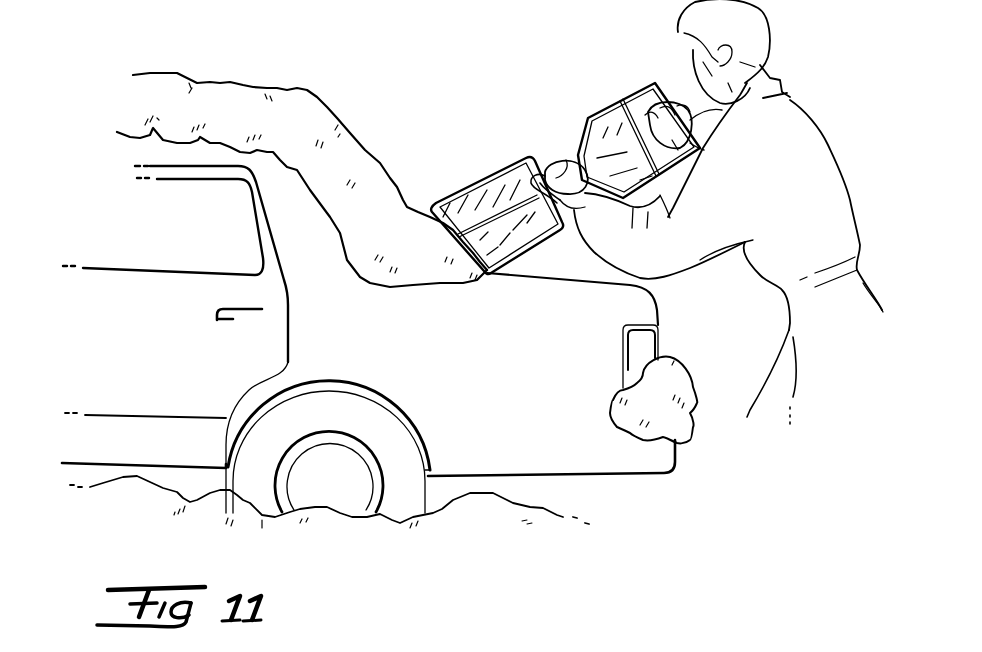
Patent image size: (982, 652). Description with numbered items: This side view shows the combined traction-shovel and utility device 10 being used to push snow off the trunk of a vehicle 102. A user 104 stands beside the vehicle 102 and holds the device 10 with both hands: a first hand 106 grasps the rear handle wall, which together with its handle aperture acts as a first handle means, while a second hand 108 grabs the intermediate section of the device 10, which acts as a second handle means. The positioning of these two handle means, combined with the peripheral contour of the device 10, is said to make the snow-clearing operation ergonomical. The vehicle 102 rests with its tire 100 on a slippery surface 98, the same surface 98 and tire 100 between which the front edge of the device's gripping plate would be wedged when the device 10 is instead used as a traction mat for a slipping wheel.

The combined traction-shovel and utility device 10 is at (491, 157).
The slippery surface 98 is at (667, 550).
The tire 100 is at (393, 503).
The vehicle 102 is at (551, 477).
The user 104 is at (817, 81).
The first hand 106 is at (667, 124).
The second hand 108 is at (555, 172).